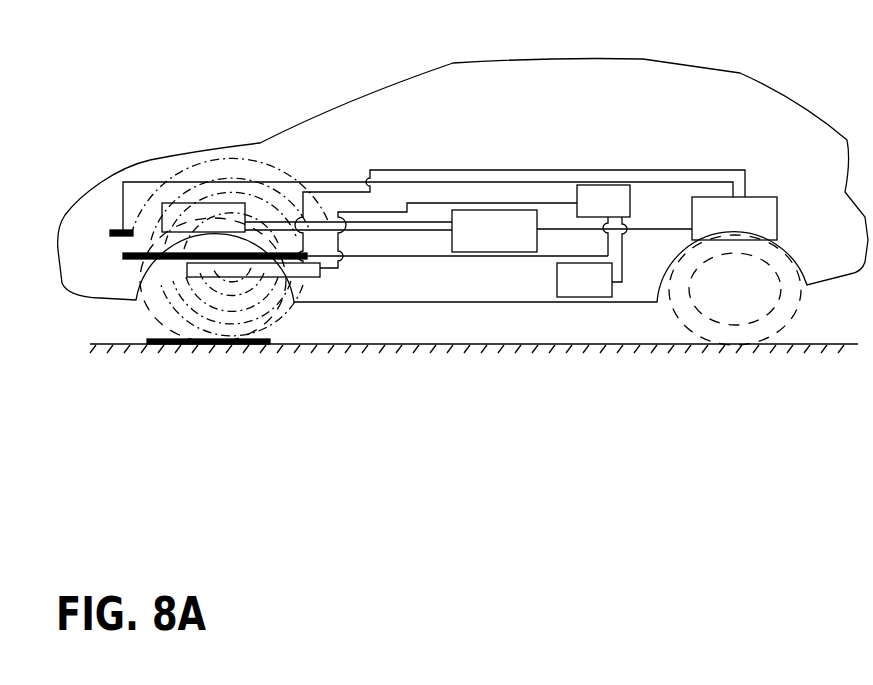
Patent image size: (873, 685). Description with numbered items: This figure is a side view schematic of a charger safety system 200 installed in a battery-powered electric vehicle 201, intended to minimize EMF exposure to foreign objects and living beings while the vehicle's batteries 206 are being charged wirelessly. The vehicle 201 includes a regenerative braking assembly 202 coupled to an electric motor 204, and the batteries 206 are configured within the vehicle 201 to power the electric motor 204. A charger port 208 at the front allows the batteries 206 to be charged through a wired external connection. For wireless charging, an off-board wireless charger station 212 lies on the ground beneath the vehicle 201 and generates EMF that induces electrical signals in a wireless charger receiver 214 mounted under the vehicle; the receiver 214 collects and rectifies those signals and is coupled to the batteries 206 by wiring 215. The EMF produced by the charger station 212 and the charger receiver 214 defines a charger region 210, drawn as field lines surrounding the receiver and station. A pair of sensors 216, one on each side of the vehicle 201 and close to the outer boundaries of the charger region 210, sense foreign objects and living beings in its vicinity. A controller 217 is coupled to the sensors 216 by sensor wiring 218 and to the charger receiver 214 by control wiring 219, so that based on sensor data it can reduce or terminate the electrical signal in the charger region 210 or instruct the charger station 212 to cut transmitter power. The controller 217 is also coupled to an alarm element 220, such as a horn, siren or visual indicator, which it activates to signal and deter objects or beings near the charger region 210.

The charger safety system 200 is at (181, 102).
The battery-powered electric vehicle 201 is at (297, 127).
The regenerative braking assembly 202 is at (190, 229).
The electric motor 204 is at (481, 241).
The batteries 206 is at (722, 229).
The charger port 208 is at (108, 229).
The charger region 210 is at (148, 284).
The wireless charger station 212 is at (152, 345).
The wireless charger receiver 214 is at (316, 272).
The wiring 215 is at (485, 168).
The sensors 216 is at (120, 252).
The controller 217 is at (590, 211).
The sensor wiring 218 is at (417, 258).
The control wiring 219 is at (427, 168).
The alarm element 220 is at (571, 291).